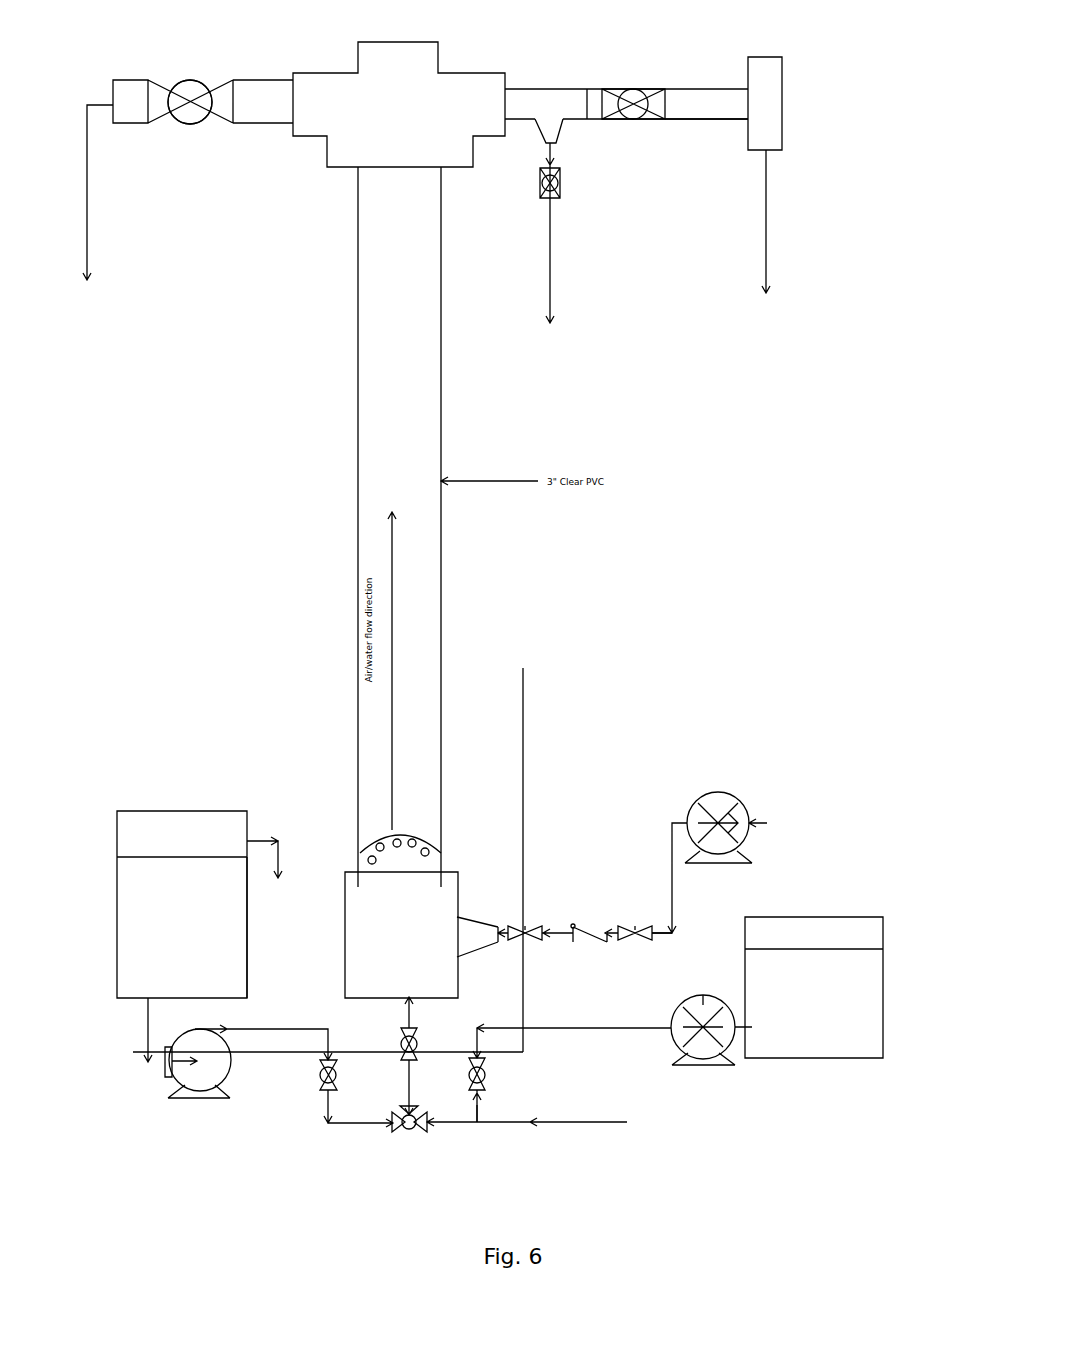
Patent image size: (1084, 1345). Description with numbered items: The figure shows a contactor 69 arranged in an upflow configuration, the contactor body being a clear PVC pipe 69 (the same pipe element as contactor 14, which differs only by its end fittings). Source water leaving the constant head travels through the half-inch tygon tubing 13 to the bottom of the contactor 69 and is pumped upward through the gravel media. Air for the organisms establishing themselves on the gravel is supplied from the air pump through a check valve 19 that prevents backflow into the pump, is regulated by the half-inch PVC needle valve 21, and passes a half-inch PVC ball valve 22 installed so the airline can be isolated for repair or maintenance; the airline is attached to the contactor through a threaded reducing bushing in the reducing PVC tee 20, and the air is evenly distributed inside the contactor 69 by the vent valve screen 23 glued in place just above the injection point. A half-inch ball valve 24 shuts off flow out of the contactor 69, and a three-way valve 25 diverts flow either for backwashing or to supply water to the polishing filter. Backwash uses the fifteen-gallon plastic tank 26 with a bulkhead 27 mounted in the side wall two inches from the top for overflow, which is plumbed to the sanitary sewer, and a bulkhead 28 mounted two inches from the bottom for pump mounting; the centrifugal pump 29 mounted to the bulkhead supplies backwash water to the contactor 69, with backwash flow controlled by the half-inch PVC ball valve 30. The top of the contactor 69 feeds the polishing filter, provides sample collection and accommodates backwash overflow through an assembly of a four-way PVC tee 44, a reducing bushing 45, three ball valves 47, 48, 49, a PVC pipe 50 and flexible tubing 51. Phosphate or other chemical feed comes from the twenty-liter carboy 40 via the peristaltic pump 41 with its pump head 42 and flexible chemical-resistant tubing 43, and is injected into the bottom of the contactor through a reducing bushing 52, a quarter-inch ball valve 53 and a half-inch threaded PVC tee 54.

The tygon tubing 13 is at (548, 1124).
The contactor 14 is at (746, 797).
The check valve 19 is at (592, 911).
The reducing pvc tee 20 is at (438, 973).
The needle valve 21 is at (639, 911).
The ball valve 22 is at (544, 911).
The vent valve screen 23 is at (449, 847).
The ball valve 24 is at (418, 1061).
The three way valve 25 is at (435, 1124).
The plastic tank 26 is at (249, 912).
The bulkhead 27 is at (238, 822).
The bulkhead 28 is at (147, 1006).
The centrifugal pump 29 is at (166, 1070).
The ball valve 30 is at (321, 1100).
The carboy 40 is at (822, 940).
The peristaltic pump 41 is at (704, 992).
The pump head 42 is at (686, 1038).
The flexible chemical resistant tubing 43 is at (574, 999).
The 4 way pvc tee 44 is at (317, 142).
The reducing bushing 45 is at (264, 71).
The ball valve 47 is at (199, 132).
The ball valve 48 is at (644, 83).
The ball valve 49 is at (576, 203).
The pvc pipe 50 is at (722, 127).
The flexible tubing 51 is at (557, 281).
The reducing bushing 52 is at (472, 1111).
The ball valve 53 is at (483, 1064).
The threaded pvc tee 54 is at (482, 1110).
The contactor 69 is at (544, 81).